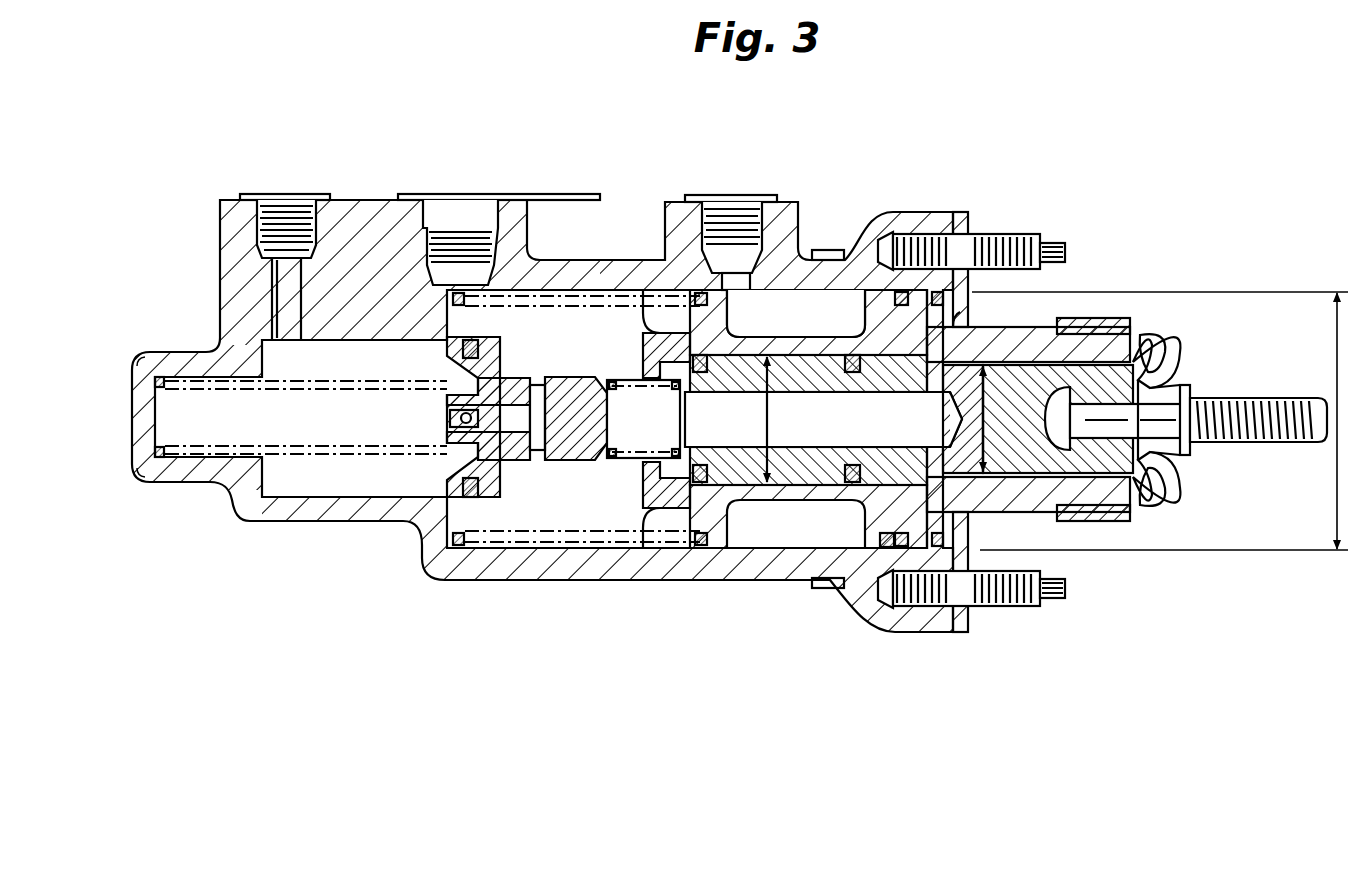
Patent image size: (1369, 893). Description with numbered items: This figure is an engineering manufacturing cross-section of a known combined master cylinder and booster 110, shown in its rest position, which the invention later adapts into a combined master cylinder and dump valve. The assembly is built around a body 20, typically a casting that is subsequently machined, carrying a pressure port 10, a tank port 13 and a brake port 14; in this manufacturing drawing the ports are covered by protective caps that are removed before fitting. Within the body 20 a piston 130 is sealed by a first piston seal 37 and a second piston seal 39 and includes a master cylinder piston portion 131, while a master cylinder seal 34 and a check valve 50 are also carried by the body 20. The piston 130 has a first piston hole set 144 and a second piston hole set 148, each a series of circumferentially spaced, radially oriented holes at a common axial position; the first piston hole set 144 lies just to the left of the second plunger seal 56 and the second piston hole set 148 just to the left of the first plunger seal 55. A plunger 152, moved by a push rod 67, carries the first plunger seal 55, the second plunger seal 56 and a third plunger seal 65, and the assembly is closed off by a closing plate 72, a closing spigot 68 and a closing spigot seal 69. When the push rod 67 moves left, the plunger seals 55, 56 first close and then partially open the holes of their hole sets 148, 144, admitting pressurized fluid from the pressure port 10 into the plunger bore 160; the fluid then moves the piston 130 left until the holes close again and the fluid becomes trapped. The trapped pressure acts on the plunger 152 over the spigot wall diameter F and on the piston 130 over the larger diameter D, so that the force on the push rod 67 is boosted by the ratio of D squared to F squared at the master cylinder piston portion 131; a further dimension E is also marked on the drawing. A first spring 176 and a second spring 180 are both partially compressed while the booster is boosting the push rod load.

The combined master cylinder and booster 110 is at (903, 157).
The brake port 14 is at (300, 210).
The tank port 13 is at (455, 235).
The second spring 180 is at (662, 290).
The pressure port 10 is at (730, 240).
The second plunger seal 56 is at (852, 352).
The closing plate 72 is at (975, 215).
The master cylinder piston portion 131 is at (512, 335).
The piston 130 is at (735, 318).
The closing spigot 68 is at (1040, 345).
The third plunger seal 65 is at (1125, 345).
The closing spigot seal 69 is at (960, 296).
The push rod 67 is at (1265, 398).
The diameter of the body main cylinder D is at (1160, 421).
The first spring 176 is at (612, 445).
The first plunger seal 55 is at (704, 360).
The section E is at (768, 419).
The plunger bore 160 is at (860, 433).
The spigot wall diameter F is at (985, 420).
The check valve 50 is at (470, 425).
The body 20 is at (440, 567).
The master cylinder seal 34 is at (470, 497).
The second piston hole set 148 is at (688, 508).
The first piston seal 37 is at (712, 548).
The first piston hole set 144 is at (845, 500).
The second piston seal 39 is at (885, 560).
The plunger 152 is at (1030, 458).